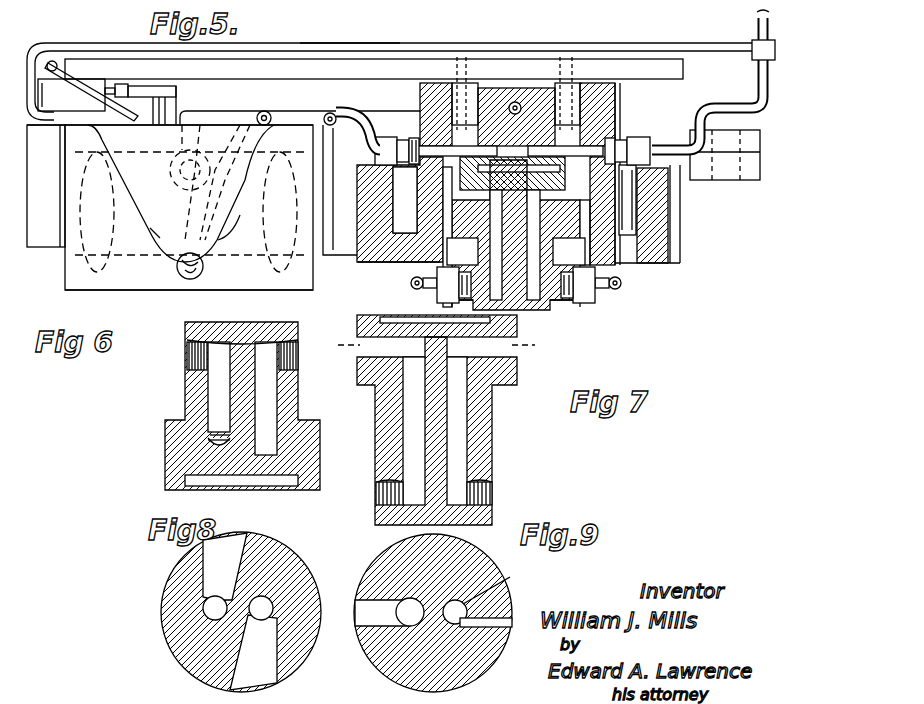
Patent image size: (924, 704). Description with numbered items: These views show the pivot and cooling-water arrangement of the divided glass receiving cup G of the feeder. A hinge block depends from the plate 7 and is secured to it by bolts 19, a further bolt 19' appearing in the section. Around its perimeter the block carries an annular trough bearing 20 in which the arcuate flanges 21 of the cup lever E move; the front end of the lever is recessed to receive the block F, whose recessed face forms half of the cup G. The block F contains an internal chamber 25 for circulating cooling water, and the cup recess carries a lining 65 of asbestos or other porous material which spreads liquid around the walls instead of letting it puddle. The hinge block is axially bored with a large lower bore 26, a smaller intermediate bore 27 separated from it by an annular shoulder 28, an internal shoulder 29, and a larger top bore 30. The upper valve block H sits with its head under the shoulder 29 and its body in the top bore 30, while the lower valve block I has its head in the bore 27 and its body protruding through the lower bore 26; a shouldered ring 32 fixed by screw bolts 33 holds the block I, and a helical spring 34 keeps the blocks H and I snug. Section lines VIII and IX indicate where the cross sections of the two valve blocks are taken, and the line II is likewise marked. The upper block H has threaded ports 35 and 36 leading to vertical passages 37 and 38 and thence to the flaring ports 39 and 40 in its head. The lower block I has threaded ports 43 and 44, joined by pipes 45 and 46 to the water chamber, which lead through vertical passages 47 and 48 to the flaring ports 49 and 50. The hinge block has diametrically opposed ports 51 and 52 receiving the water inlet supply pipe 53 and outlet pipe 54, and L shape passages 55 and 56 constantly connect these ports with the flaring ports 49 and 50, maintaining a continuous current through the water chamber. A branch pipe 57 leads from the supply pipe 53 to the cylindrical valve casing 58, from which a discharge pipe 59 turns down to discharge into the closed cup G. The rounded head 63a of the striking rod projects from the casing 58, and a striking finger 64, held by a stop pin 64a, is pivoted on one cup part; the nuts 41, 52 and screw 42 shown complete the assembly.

In FIG. 5, the plate 7 is at (683, 79).
In FIG. 5, the bolts 19 is at (577, 71).
In FIG. 5, the bolt 19' is at (456, 71).
In FIG. 5, the annular trough bearing 20 is at (366, 268).
In FIG. 5, the arcuate flanges 21 is at (400, 265).
In FIG. 5, the internal chambers 25 is at (144, 290).
In FIG. 5, the large lower bore 26 is at (569, 251).
In FIG. 5, the intermediate bore 27 is at (672, 192).
In FIG. 5, the annular shoulder 28 is at (580, 178).
In FIG. 5, the internal shoulder 29 is at (598, 132).
In FIG. 5, the top bore 30 is at (596, 106).
In FIG. 5, the shouldered ring 32 is at (595, 205).
In FIG. 5, the screw bolts 33 is at (600, 235).
In FIG. 5, the helical spring 34 is at (668, 218).
In FIG. 7, the threaded port 35 is at (357, 343).
In FIG. 6, the threaded port 36 is at (188, 345).
In FIG. 6, the vertical passage 37 is at (270, 392).
In FIG. 8, the vertical passage 37 is at (261, 608).
In FIG. 6, the vertical passage 38 is at (210, 400).
In FIG. 8, the vertical passage 38 is at (215, 608).
In FIG. 8, the flaring port 39 is at (253, 652).
In FIG. 6, the flaring port 40 is at (208, 450).
In FIG. 8, the flaring port 40 is at (225, 566).
In FIG. 5, the nut 41 is at (382, 125).
In FIG. 5, the screw 42 is at (268, 107).
In FIG. 5, the threaded port 43 is at (540, 308).
In FIG. 7, the threaded port 43 is at (485, 493).
In FIG. 5, the threaded port 44 is at (462, 251).
In FIG. 7, the threaded port 44 is at (385, 493).
In FIG. 5, the pipe 45 is at (448, 163).
In FIG. 5, the pipe 46 is at (410, 287).
In FIG. 5, the vertical passage 47 is at (522, 312).
In FIG. 7, the vertical passage 47 is at (465, 455).
In FIG. 9, the vertical passage 47 is at (455, 612).
In FIG. 7, the vertical passage 48 is at (412, 450).
In FIG. 9, the vertical passage 48 is at (401, 619).
In FIG. 9, the flaring port 49 is at (500, 583).
In FIG. 9, the flaring port 50 is at (360, 618).
In FIG. 5, the port 51 is at (640, 138).
In FIG. 5, the port 52 is at (418, 140).
In FIG. 5, the water inlet supply pipe 53 is at (724, 102).
In FIG. 5, the outlet pipe 54 is at (346, 2).
In FIG. 5, the L shape passage 55 is at (690, 183).
In FIG. 5, the L shape passage 56 is at (376, 200).
In FIG. 5, the branch pipe 57 is at (90, 43).
In FIG. 5, the cylindrical valve casing 58 is at (71, 95).
In FIG. 5, the discharge pipe 59 is at (90, 91).
In FIG. 5, the head 63a is at (128, 88).
In FIG. 5, the striking finger 64 is at (178, 88).
In FIG. 5, the stop pin 64a is at (168, 108).
In FIG. 5, the lining 65 is at (206, 264).
In FIG. 5, the cup lever E is at (46, 186).
In FIG. 5, the block F is at (68, 273).
In FIG. 5, the glass receiving cup G is at (181, 193).
In FIG. 5, the upper valve block H is at (517, 88).
In FIG. 6, the upper valve block H is at (158, 384).
In FIG. 8, the upper valve block H is at (162, 598).
In FIG. 5, the lower valve block I is at (536, 310).
In FIG. 7, the lower valve block I is at (497, 432).
In FIG. 9, the lower valve block I is at (366, 564).
In FIG. 5, the section line II is at (684, 286).
In FIG. 7, the section line IX is at (436, 372).
In FIG. 6, the section line VIII is at (143, 443).
In FIG. 7, the section line VIII is at (343, 445).